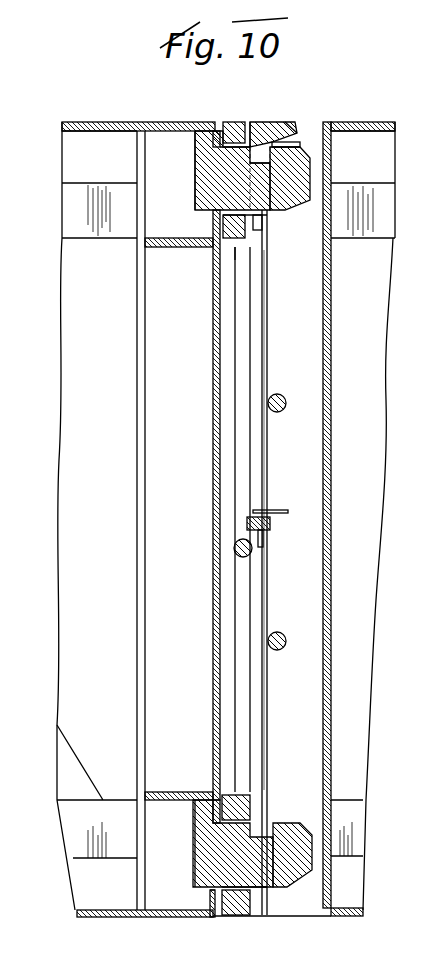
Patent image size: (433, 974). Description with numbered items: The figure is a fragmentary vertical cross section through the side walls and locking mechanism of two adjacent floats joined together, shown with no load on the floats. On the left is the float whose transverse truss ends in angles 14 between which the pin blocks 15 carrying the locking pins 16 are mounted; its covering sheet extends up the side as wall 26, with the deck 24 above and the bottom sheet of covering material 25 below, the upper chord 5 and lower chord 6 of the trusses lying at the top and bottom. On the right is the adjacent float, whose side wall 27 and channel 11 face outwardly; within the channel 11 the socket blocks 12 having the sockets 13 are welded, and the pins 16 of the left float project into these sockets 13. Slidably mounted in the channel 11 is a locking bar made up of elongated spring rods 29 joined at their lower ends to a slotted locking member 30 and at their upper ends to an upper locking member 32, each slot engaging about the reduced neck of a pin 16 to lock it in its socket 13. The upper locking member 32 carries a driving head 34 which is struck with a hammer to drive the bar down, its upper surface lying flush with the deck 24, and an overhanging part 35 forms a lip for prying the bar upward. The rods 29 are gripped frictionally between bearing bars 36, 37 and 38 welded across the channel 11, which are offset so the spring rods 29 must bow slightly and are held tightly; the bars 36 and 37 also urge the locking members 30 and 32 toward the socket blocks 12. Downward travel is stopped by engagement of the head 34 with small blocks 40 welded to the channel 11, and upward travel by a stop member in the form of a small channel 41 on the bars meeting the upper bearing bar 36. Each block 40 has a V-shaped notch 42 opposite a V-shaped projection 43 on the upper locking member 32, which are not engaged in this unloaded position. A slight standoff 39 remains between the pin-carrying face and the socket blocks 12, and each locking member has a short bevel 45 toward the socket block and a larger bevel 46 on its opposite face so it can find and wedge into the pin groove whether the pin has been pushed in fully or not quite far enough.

The upper chord 5 is at (68, 212).
The lower chord 6 is at (75, 828).
The channel 11 is at (313, 341).
The socket block 12 is at (110, 118).
The socket 13 is at (243, 135).
The angle 14 is at (160, 374).
The pin block 15 is at (208, 200).
The locking pin 16 is at (296, 210).
The deck 24 is at (90, 123).
The bottom sheet of covering material 25 is at (90, 912).
The side wall 26 is at (213, 458).
The side wall 27 is at (356, 968).
The rod 29 is at (257, 322).
The locking member 30 is at (258, 795).
The upper locking member 32 is at (263, 230).
The driving head 34 is at (270, 125).
The overhanging part 35 is at (290, 128).
The bearing bar 36 is at (286, 398).
The bearing bar 37 is at (283, 632).
The bearing bar 38 is at (234, 548).
The standoff 39 is at (215, 915).
The block 40 is at (265, 160).
The stop member 41 is at (283, 508).
The V-shaped notch 42 is at (298, 145).
The V-shaped projection 43 is at (262, 152).
The short bevel 45 is at (220, 283).
The bevel 46 is at (270, 915).